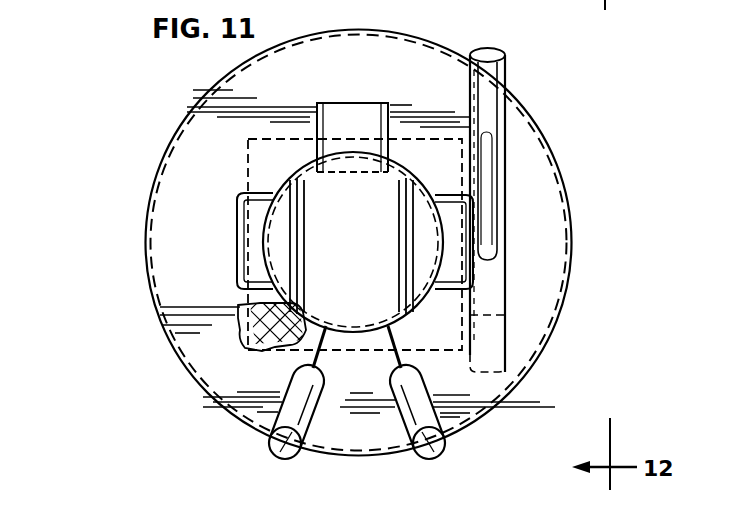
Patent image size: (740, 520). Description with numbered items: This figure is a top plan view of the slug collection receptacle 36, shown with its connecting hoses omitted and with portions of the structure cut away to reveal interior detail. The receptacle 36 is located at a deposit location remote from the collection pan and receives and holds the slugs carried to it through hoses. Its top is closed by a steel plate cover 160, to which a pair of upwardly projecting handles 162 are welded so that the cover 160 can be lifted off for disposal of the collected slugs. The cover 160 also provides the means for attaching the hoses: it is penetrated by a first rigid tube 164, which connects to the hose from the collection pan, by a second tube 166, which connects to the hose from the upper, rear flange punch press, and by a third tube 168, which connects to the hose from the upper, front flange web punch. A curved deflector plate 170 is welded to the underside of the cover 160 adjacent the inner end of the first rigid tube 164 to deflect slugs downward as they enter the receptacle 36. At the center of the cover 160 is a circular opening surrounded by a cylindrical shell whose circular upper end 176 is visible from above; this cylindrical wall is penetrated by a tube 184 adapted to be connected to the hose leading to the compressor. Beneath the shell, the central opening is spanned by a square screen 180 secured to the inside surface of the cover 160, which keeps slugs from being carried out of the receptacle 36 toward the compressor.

The slug collection receptacle 36 is at (550, 134).
The cover 160 is at (552, 243).
The handles 162 is at (237, 212).
The first rigid tube 164 is at (508, 72).
The second tube 166 is at (432, 459).
The third tube 168 is at (275, 456).
The curved deflector plate 170 is at (557, 337).
The circular upper end 176 is at (318, 187).
The square screen 180 is at (240, 340).
The tube 184 is at (383, 103).